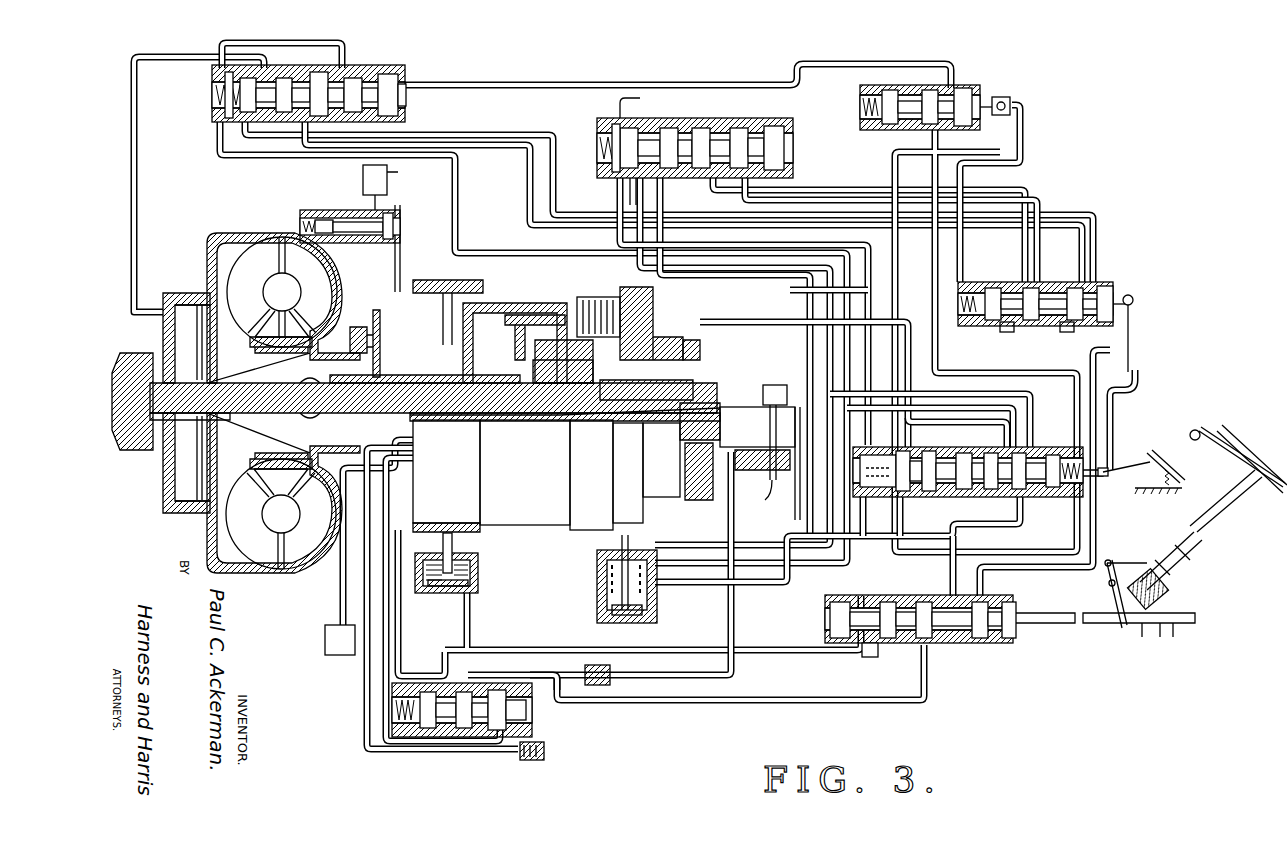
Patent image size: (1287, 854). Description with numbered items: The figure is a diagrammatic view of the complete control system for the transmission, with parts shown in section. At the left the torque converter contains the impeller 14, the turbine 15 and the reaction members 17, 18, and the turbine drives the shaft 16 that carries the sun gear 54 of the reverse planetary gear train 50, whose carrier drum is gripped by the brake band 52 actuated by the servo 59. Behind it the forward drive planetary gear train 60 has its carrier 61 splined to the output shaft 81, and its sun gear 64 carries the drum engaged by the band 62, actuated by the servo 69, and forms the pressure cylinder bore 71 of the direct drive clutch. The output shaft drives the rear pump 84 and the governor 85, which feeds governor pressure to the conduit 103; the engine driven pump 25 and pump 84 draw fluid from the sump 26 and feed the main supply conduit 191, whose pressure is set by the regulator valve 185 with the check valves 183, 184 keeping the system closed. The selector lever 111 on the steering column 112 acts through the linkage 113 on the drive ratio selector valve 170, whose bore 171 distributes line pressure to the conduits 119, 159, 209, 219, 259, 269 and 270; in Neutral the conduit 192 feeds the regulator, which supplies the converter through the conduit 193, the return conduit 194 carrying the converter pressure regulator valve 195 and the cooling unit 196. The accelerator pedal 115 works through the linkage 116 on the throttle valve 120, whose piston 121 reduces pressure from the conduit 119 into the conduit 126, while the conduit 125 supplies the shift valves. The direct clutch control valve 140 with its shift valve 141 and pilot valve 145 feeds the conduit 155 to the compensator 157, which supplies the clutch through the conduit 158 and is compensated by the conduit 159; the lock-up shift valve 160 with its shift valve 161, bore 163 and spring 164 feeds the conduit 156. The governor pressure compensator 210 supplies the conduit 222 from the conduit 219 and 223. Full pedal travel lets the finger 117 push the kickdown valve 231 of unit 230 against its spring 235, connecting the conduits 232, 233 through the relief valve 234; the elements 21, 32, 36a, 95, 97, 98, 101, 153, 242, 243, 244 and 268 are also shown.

The pump or impeller member 14 is at (282, 292).
The turbine or runner member 15 is at (276, 303).
The torque converter turbine driven shaft 16 is at (433, 401).
The guide wheel or reaction member 17 is at (282, 324).
The guide wheel or reaction member 18 is at (281, 332).
The shaft 21 is at (325, 386).
The engine driven pump 25 is at (385, 480).
The oil sump 26 is at (325, 653).
The clutch 32 is at (418, 348).
The housing 36a is at (175, 508).
The reverse planetary gear train 50 is at (495, 303).
The braking band 52 is at (437, 280).
The sun gear member 54 is at (565, 405).
The servo unit 59 is at (471, 574).
The forward drive planetary gear train 60 is at (556, 300).
The planet carrier 61 is at (563, 382).
The braking band 62 is at (608, 290).
The sun gear 64 is at (635, 392).
The servo unit 69 is at (632, 588).
The pressure cylinder bore 71 is at (688, 345).
The output shaft 81 is at (700, 421).
The gear type oil pump 84 is at (700, 505).
The governor 85 is at (760, 390).
The lever 95 is at (786, 500).
The piston 97 is at (760, 463).
The pin 98 is at (778, 478).
The cylinder 101 is at (740, 480).
The governor pressure supply conduit 103 is at (895, 178).
The drive selector lever 111 is at (1194, 431).
The steering column 112 is at (1225, 515).
The linkage 113 is at (1130, 560).
The accelerator pedal 115 is at (1175, 473).
The linkage 116 is at (1148, 455).
The finger-like projection 117 is at (1137, 373).
The supply conduit 119 is at (952, 573).
The torque responsive throttle valve 120 is at (1092, 488).
The throttle valve piston 121 is at (997, 480).
The conduit 125 is at (990, 412).
The conduit 126 is at (1020, 398).
The direct clutch automatic control valve mechanism 140 is at (692, 145).
The shift valve 141 is at (656, 148).
The pilot valve 145 is at (738, 148).
The conduit 153 is at (746, 311).
The conduit 155 is at (645, 185).
The conduit 156 is at (135, 143).
The direct drive clutch pressure compensator unit 157 is at (877, 486).
The conduit 158 is at (745, 315).
The conduit 159 is at (901, 517).
The converter lock-up shift valve 160 is at (306, 84).
The shift valve 161 is at (266, 95).
The valve bore 163 is at (371, 95).
The spring 164 is at (213, 95).
The drive ratio selector valve 170 is at (1011, 631).
The bore 171 is at (962, 643).
The check valve 183 is at (518, 755).
The check valve 184 is at (612, 670).
The pressure regulator valve 185 is at (497, 730).
The main supply conduit 191 is at (780, 705).
The conduit 192 is at (512, 672).
The conduit 193 is at (400, 621).
The conduit 194 is at (400, 255).
The converter pressure regulator valve 195 is at (400, 215).
The pressure fluid cooling unit 196 is at (362, 180).
The conduit 209 is at (940, 181).
The governor pressure compensator 210 is at (975, 85).
The conduit 219 is at (1022, 144).
The conduit 222 is at (845, 126).
The conduit 223 is at (503, 80).
The kickdown valve 230 is at (1112, 282).
The piston valve 231 is at (1066, 287).
The conduit 232 is at (1116, 244).
The conduit 233 is at (478, 135).
The relief valve 234 is at (1074, 330).
The spring 235 is at (973, 274).
The port 242 is at (1012, 262).
The port 243 is at (1020, 241).
The port 244 is at (1021, 332).
The coast conduit 259 is at (858, 292).
The conduit 268 is at (798, 660).
The conduit 269 is at (452, 672).
The conduit 270 is at (472, 621).